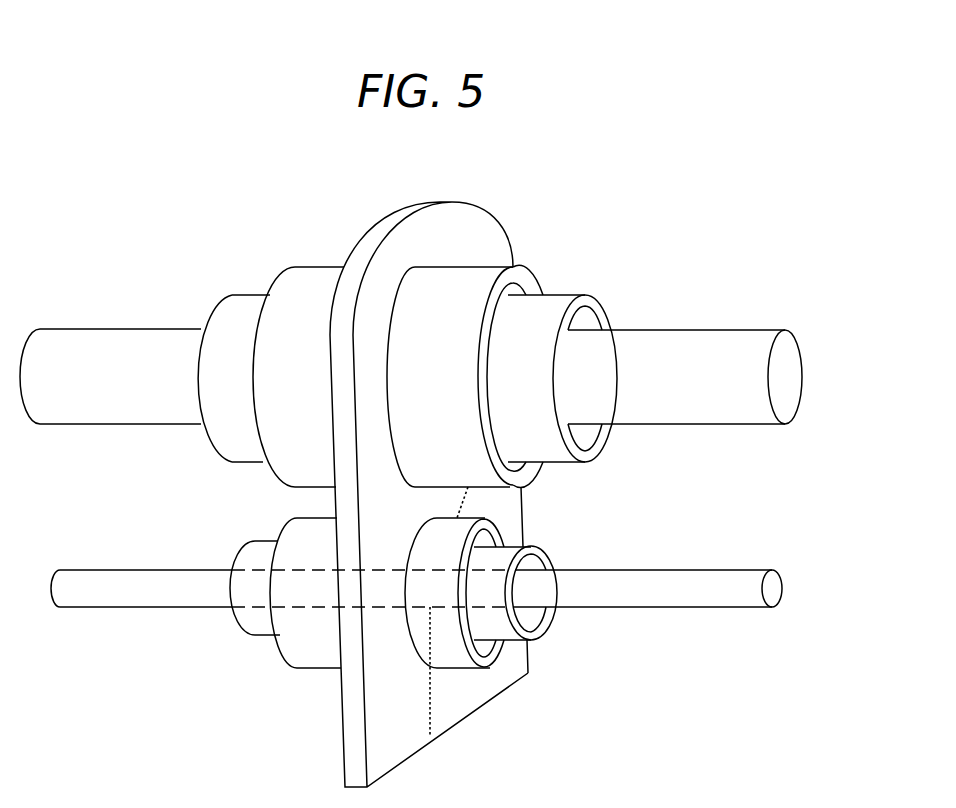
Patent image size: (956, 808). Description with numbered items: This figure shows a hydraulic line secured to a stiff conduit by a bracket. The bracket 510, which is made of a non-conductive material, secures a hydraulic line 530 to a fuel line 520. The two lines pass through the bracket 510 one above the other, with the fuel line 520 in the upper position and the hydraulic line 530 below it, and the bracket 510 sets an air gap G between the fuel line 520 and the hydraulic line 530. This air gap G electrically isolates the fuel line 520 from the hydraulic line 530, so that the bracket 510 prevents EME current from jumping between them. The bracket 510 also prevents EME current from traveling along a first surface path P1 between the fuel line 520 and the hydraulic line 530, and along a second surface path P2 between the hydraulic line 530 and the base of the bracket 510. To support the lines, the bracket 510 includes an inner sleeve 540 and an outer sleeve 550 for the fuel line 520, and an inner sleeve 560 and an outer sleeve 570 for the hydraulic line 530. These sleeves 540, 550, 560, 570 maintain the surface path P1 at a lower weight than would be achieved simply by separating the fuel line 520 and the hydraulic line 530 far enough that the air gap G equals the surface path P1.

The bracket 510 is at (469, 192).
The fuel line 520 is at (757, 330).
The hydraulic line 530 is at (677, 570).
The inner sleeve 540 is at (573, 295).
The outer sleeve 550 is at (521, 268).
The inner sleeve 560 is at (550, 632).
The outer sleeve 570 is at (498, 658).
The air gap G is at (99, 555).
The first surface path P1 is at (457, 505).
The second surface path P2 is at (428, 695).